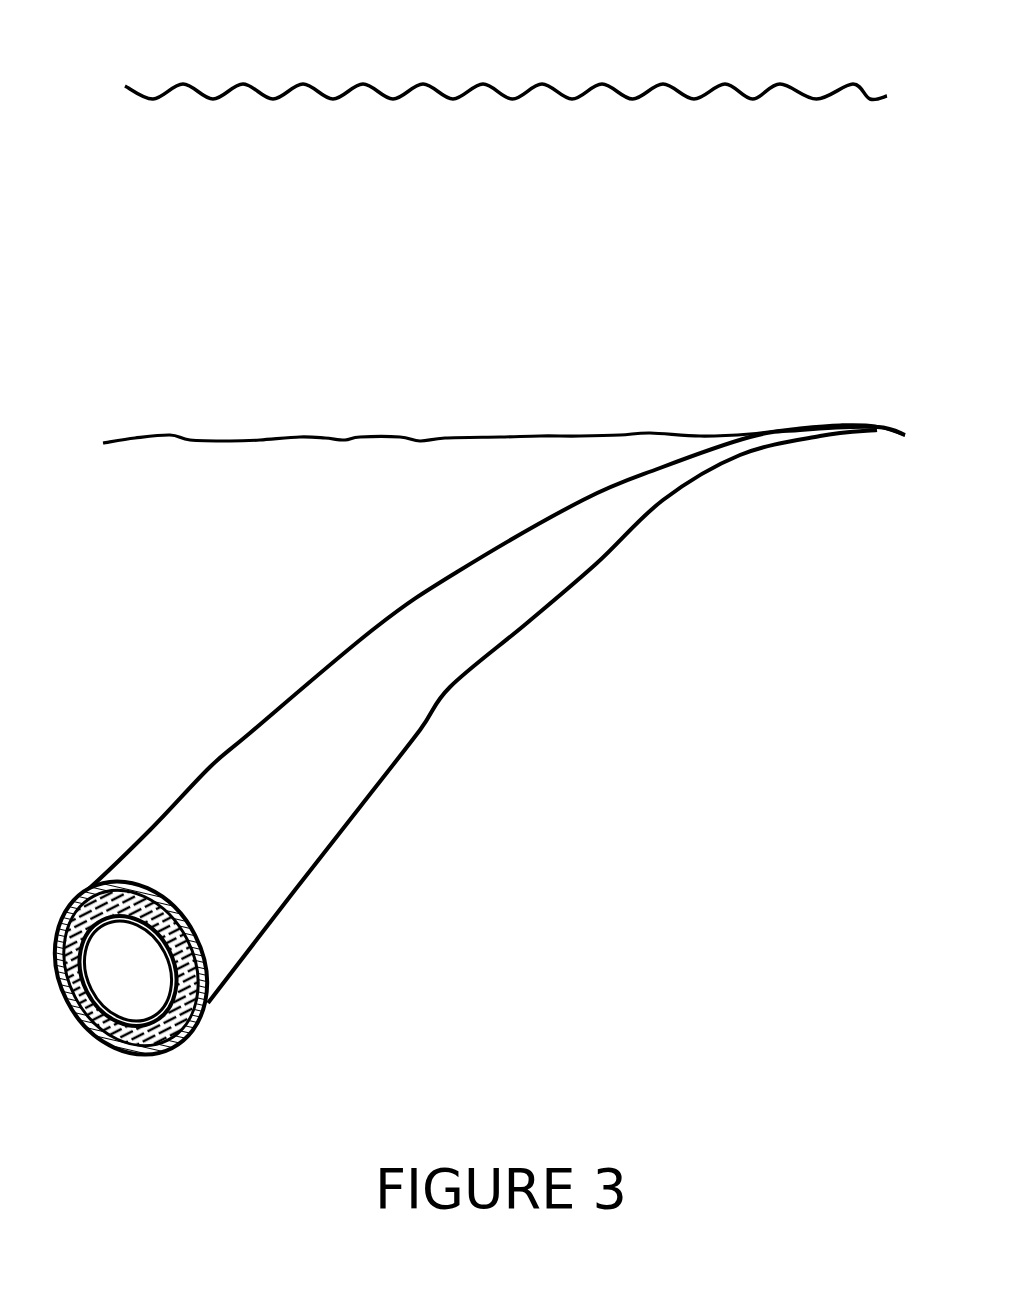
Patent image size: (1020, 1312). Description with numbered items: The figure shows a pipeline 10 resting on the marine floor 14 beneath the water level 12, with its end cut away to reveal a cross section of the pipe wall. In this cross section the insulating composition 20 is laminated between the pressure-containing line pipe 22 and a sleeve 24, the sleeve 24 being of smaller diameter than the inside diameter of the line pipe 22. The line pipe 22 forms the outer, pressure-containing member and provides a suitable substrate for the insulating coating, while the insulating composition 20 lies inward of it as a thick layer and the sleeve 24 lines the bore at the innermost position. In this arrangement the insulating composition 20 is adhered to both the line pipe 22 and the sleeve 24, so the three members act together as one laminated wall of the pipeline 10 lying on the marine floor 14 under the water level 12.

The pipeline 10 is at (490, 715).
The water level 12 is at (506, 52).
The marine floor 14 is at (504, 396).
The insulating composition 20 is at (221, 968).
The line pipe 22 is at (224, 968).
The sleeve 24 is at (199, 1009).